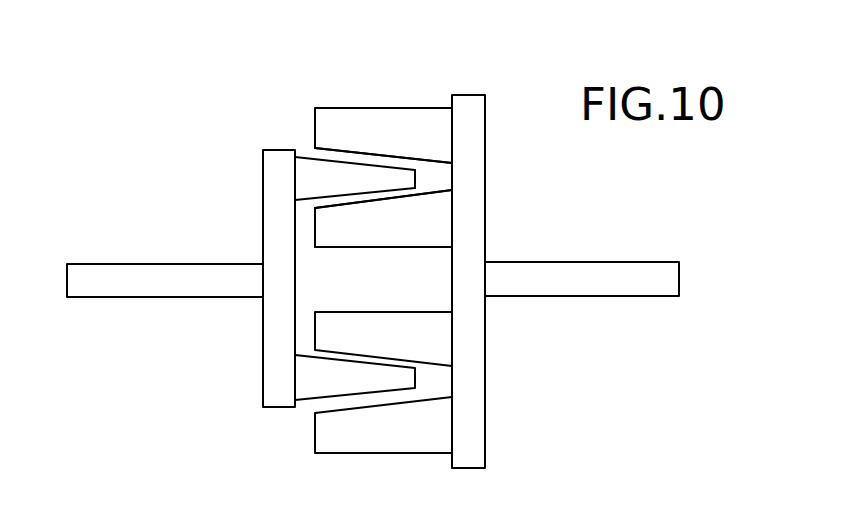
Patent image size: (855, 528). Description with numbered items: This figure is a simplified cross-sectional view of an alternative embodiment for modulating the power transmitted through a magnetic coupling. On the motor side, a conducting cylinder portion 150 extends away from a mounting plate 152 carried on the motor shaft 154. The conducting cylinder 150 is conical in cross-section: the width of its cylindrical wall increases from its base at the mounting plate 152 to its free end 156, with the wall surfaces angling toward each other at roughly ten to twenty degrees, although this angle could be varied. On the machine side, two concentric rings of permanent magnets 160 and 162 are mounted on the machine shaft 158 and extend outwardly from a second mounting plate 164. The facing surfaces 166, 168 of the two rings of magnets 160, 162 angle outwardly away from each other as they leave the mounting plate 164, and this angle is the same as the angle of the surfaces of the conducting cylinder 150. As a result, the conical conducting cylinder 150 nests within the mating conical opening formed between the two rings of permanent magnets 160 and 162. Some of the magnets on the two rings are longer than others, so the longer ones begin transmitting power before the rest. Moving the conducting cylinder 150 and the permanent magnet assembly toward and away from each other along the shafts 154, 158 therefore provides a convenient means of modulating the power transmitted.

The conducting cylinder portion 150 is at (303, 166).
The mounting plate 152 is at (270, 168).
The motor shaft 154 is at (105, 268).
The free end 156 is at (415, 182).
The machine shaft 158 is at (640, 272).
The ring of permanent magnets 160 is at (397, 122).
The ring of permanent magnets 162 is at (427, 230).
The mounting plate 164 is at (477, 127).
The facing surface 166 is at (345, 152).
The facing surface 168 is at (348, 208).